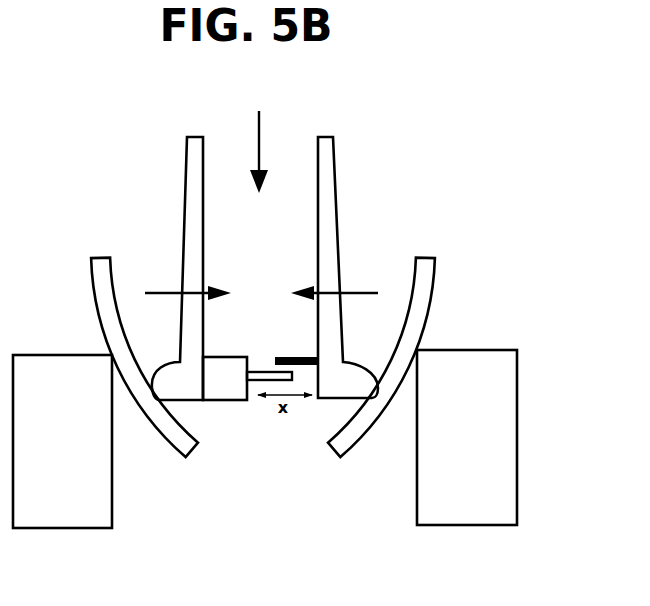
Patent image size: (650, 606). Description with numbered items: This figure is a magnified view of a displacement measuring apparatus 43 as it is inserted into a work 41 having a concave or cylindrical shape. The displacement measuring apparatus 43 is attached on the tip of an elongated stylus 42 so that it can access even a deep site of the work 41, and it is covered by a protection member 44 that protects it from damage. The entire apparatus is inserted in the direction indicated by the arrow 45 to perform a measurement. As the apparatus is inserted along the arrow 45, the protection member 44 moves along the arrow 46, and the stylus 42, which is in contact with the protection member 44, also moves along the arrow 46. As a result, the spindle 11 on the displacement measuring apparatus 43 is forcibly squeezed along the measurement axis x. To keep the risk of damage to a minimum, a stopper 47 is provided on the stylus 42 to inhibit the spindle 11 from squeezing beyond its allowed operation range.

The spindle 11 is at (256, 373).
The work 41 is at (103, 512).
The stylus 42 is at (330, 204).
The displacement measuring apparatus 43 is at (228, 395).
The protection member 44 is at (98, 284).
The arrow 45 is at (252, 128).
The arrow 46 is at (165, 293).
The stopper 47 is at (336, 358).